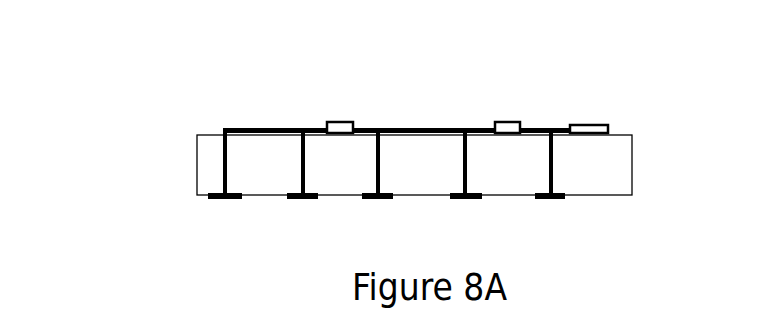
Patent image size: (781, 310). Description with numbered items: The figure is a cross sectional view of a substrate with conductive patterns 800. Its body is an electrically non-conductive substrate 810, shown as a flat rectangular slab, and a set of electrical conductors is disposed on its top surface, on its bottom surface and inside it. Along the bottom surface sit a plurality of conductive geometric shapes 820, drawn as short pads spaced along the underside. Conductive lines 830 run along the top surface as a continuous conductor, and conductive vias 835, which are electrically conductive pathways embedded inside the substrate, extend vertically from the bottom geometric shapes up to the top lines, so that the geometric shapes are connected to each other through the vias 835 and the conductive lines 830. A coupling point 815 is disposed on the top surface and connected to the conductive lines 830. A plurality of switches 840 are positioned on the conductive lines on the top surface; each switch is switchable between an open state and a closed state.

The substrate with conductive patterns 800 is at (388, 147).
The non-conductive substrate 810 is at (602, 170).
The coupling point 815 is at (588, 127).
The conductive geometric shapes 820 is at (222, 205).
The conductive lines 830 is at (232, 124).
The conductive vias 835 is at (218, 166).
The switches 840 is at (340, 125).